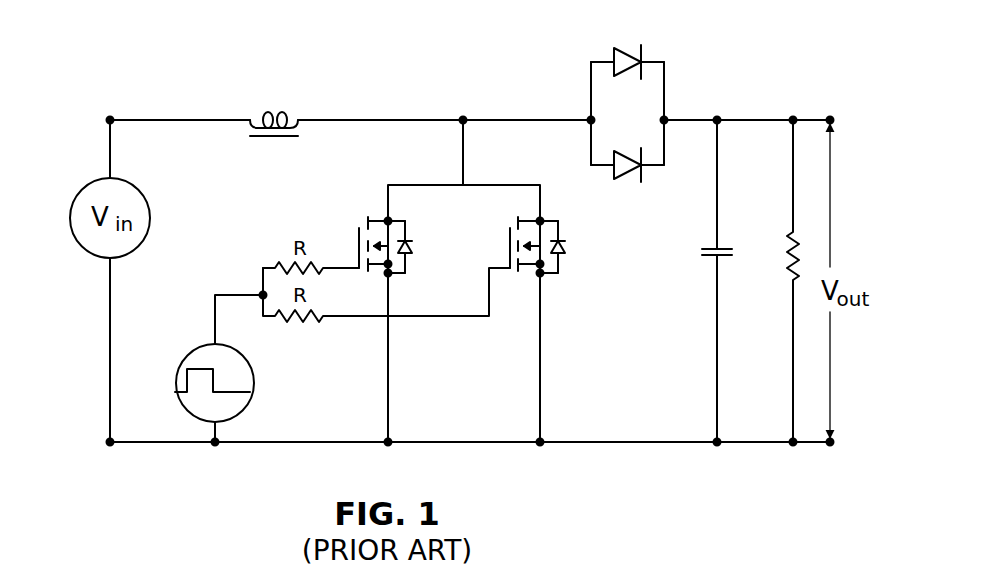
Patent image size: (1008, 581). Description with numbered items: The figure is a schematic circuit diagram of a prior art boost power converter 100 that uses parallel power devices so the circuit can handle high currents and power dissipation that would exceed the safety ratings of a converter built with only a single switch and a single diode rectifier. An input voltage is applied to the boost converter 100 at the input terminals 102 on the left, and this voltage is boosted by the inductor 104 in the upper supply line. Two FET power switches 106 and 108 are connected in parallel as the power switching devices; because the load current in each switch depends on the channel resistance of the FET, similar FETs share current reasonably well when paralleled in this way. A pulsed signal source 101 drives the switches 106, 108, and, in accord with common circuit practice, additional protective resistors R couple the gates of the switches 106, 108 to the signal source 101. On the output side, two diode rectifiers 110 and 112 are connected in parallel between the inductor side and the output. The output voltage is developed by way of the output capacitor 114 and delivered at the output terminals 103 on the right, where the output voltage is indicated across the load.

The boost power converter 100 is at (563, 475).
The pulsed signal source 101 is at (254, 383).
The input terminals 102 is at (107, 121).
The output terminals 103 is at (833, 121).
The inductor 104 is at (288, 110).
The FET power switch 106 is at (357, 229).
The FET power switch 108 is at (509, 247).
The diode rectifier 110 is at (624, 48).
The diode rectifier 112 is at (629, 171).
The output capacitor 114 is at (712, 258).